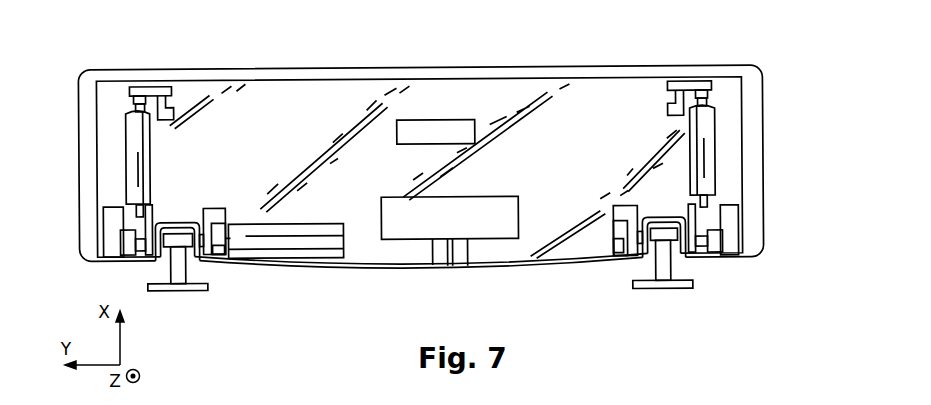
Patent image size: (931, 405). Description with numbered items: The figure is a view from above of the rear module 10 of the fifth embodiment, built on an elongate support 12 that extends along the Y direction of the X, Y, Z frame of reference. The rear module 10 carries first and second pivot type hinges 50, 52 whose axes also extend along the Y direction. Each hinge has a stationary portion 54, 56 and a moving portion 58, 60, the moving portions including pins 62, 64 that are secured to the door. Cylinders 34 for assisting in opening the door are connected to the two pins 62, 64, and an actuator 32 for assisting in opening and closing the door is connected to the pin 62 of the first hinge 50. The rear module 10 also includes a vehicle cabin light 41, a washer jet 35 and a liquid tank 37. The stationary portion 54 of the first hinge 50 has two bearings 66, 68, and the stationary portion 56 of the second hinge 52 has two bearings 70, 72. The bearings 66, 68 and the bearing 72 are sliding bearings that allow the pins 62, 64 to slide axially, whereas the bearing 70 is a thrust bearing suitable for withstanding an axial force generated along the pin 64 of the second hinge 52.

The rear module 10 is at (667, 54).
The elongate support 12 is at (273, 106).
The actuator 32 is at (320, 232).
The cylinders 34 is at (136, 133).
The washer jet 35 is at (437, 256).
The liquid tank 37 is at (482, 222).
The vehicle cabin light 41 is at (436, 133).
The first hinge 50 is at (253, 279).
The second hinge 52 is at (617, 281).
The stationary portion 54 is at (212, 205).
The stationary portion 56 is at (614, 200).
The moving portion 58 is at (175, 273).
The moving portion 60 is at (660, 268).
The pin 62 is at (176, 235).
The pin 64 is at (663, 243).
The bearing 66 is at (110, 239).
The bearing 68 is at (218, 244).
The bearing 70 is at (612, 241).
The bearing 72 is at (730, 239).